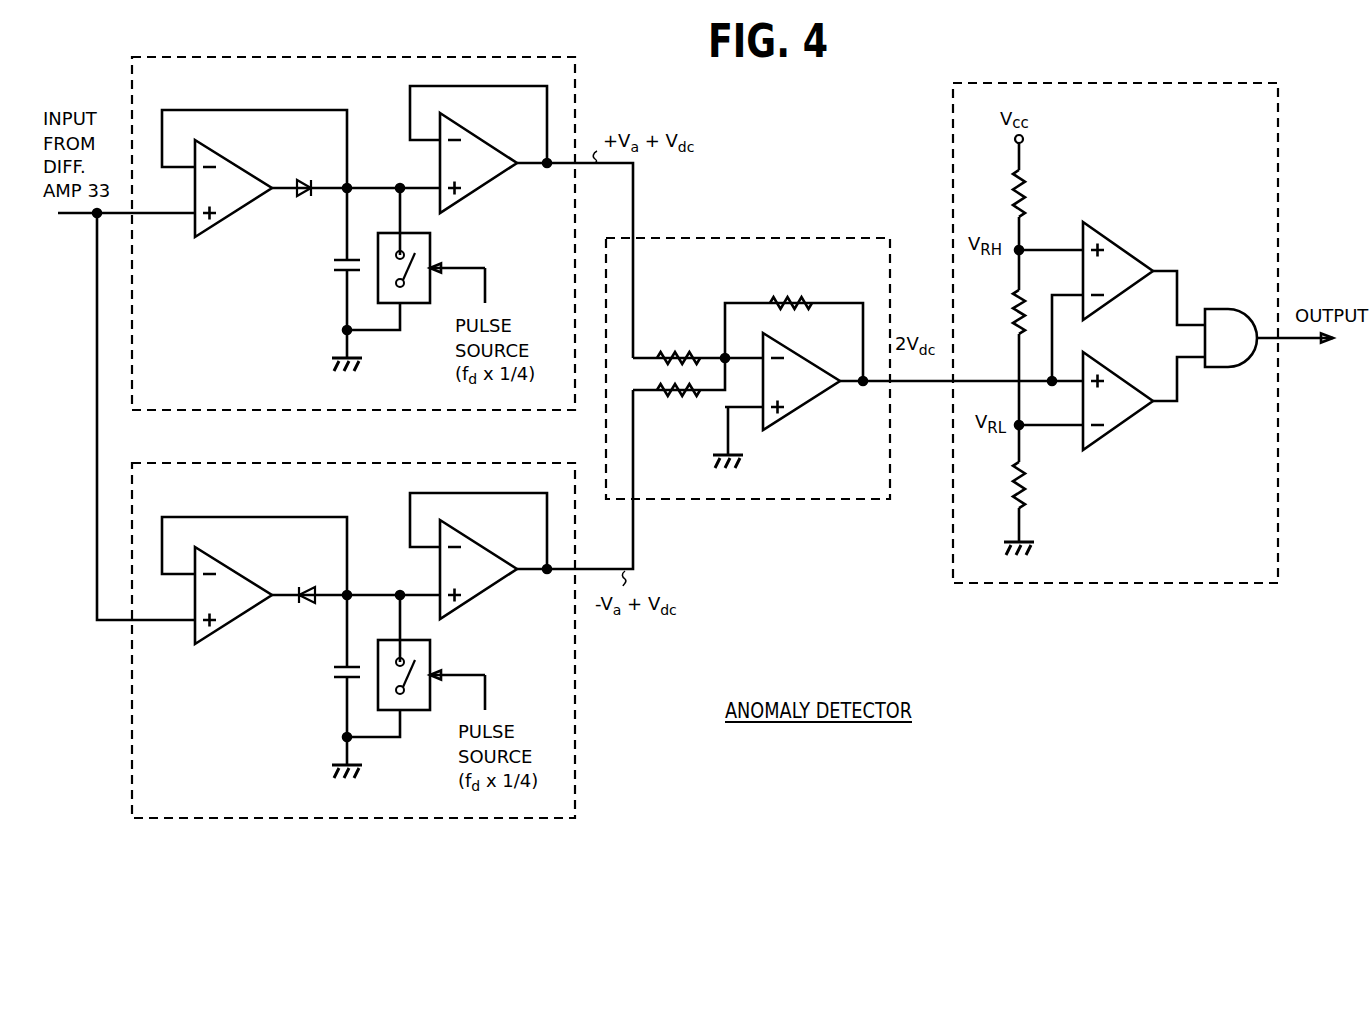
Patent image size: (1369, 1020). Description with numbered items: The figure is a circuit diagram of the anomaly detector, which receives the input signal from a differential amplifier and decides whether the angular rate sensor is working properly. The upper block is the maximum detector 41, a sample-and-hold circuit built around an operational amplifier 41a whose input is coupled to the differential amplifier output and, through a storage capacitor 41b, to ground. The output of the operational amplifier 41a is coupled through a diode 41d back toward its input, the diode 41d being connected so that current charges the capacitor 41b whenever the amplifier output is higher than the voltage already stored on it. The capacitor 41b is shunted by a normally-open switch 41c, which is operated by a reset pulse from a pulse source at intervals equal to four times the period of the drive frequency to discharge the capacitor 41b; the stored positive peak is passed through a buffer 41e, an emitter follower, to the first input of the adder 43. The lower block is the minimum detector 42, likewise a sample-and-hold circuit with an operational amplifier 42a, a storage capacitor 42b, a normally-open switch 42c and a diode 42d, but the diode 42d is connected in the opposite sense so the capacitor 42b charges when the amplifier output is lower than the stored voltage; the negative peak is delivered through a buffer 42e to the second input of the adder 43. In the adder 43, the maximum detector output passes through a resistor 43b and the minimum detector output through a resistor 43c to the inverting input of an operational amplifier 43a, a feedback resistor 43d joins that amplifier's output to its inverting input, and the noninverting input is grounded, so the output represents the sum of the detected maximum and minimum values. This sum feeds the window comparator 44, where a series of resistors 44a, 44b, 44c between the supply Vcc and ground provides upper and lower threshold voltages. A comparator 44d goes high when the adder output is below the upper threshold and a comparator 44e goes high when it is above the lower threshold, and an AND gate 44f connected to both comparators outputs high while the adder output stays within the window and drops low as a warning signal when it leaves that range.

The maximum detector 41 is at (328, 58).
The operational amplifier 41a is at (229, 164).
The storage capacitor 41b is at (333, 266).
The normally-open switch 41c is at (430, 243).
The diode 41d is at (302, 200).
The buffer 41e is at (490, 178).
The minimum detector 42 is at (340, 463).
The operational amplifier 42a is at (231, 568).
The storage capacitor 42b is at (341, 673).
The normally-open switch 42c is at (435, 649).
The diode 42d is at (302, 603).
The buffer 42e is at (480, 592).
The adder 43 is at (733, 238).
The operational amplifier 43a is at (788, 417).
The resistor 43b is at (672, 351).
The resistor 43c is at (679, 397).
The feedback resistor 43d is at (793, 299).
The window comparator 44 is at (1117, 84).
The resistor 44a is at (1009, 201).
The resistor 44b is at (1009, 310).
The resistor 44c is at (1009, 483).
The comparator 44d is at (1108, 235).
The comparator 44e is at (1113, 375).
The AND gate 44f is at (1218, 310).